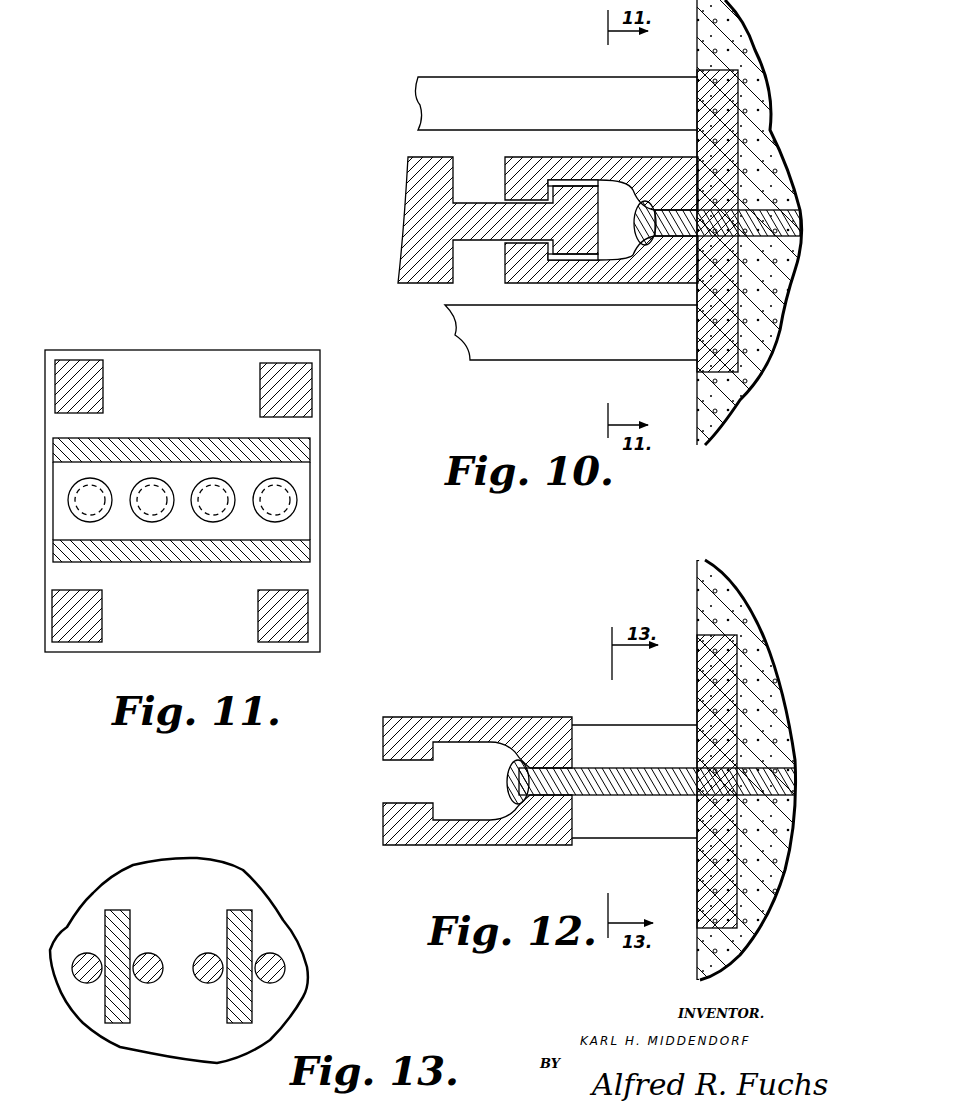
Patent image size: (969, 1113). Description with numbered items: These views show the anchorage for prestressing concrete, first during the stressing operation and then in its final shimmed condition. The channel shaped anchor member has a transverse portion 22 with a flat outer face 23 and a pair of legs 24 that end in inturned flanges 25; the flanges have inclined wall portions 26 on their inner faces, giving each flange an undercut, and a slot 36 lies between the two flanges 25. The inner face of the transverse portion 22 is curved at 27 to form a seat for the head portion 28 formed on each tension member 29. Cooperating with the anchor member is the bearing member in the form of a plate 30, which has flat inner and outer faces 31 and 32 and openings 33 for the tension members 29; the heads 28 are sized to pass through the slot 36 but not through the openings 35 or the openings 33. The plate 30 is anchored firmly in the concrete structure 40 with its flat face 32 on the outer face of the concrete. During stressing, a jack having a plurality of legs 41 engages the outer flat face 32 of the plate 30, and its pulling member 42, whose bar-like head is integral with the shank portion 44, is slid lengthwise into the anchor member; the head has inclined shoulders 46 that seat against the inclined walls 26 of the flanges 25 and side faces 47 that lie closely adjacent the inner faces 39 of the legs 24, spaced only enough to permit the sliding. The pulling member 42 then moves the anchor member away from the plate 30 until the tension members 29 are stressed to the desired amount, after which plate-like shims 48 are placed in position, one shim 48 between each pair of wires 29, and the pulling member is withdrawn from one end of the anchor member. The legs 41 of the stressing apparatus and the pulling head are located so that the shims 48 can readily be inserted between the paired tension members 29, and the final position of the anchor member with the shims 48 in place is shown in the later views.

In FIG. 12, the transverse portion 22 is at (548, 753).
In FIG. 12, the flat outer face 23 is at (577, 750).
In FIG. 10, the legs 24 is at (582, 173).
In FIG. 11, the legs 24 is at (293, 453).
In FIG. 12, the legs 24 is at (477, 727).
In FIG. 10, the inturned flanges 25 is at (520, 180).
In FIG. 12, the inturned flanges 25 is at (383, 750).
In FIG. 10, the inclined wall portions 26 is at (553, 193).
In FIG. 12, the inclined wall portions 26 is at (440, 792).
In FIG. 10, the curved inner face 27 is at (643, 187).
In FIG. 11, the curved inner face 27 is at (317, 477).
In FIG. 12, the curved inner face 27 is at (495, 757).
In FIG. 10, the head portion 28 is at (630, 263).
In FIG. 11, the head portion 28 is at (100, 480).
In FIG. 12, the head portion 28 is at (493, 800).
In FIG. 10, the tension member 29 is at (757, 207).
In FIG. 11, the tension member 29 is at (143, 460).
In FIG. 12, the tension member 29 is at (760, 777).
In FIG. 13, the tension member 29 is at (283, 973).
In FIG. 10, the bearing member plate 30 is at (700, 93).
In FIG. 11, the bearing member plate 30 is at (228, 352).
In FIG. 12, the bearing member plate 30 is at (700, 910).
In FIG. 13, the bearing member plate 30 is at (237, 892).
In FIG. 10, the inner face 31 is at (743, 120).
In FIG. 12, the inner face 31 is at (737, 687).
In FIG. 10, the outer face 32 is at (677, 193).
In FIG. 11, the outer face 32 is at (170, 380).
In FIG. 12, the outer face 32 is at (693, 697).
In FIG. 10, the openings 33 is at (763, 280).
In FIG. 12, the openings 33 is at (710, 843).
In FIG. 10, the openings 35 is at (673, 247).
In FIG. 12, the openings 35 is at (548, 837).
In FIG. 10, the slot 36 is at (490, 252).
In FIG. 12, the slot 36 is at (382, 782).
In FIG. 10, the inner faces of the legs 39 is at (577, 177).
In FIG. 10, the concrete structure 40 is at (763, 343).
In FIG. 12, the concrete structure 40 is at (757, 627).
In FIG. 10, the jack legs 41 is at (500, 90).
In FIG. 11, the jack legs 41 is at (80, 372).
In FIG. 10, the pulling member 42 is at (412, 262).
In FIG. 10, the shank portion 44 is at (470, 217).
In FIG. 10, the inclined shoulders 46 is at (595, 225).
In FIG. 10, the side faces 47 is at (598, 188).
In FIG. 12, the shims 48 is at (627, 828).
In FIG. 13, the shims 48 is at (115, 918).